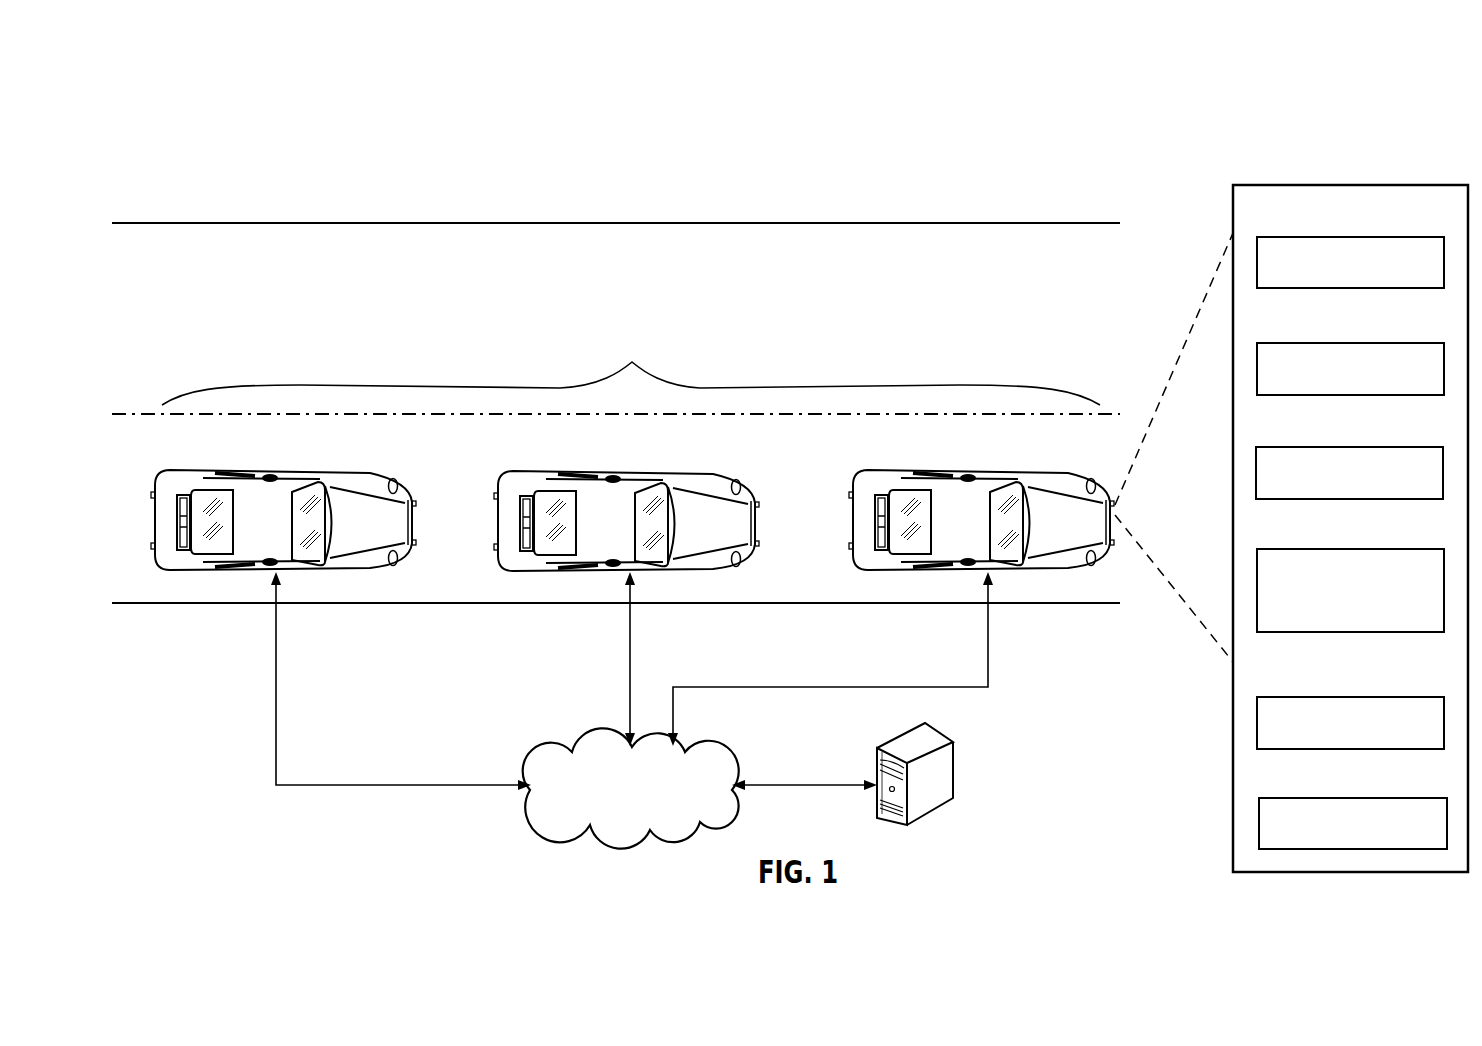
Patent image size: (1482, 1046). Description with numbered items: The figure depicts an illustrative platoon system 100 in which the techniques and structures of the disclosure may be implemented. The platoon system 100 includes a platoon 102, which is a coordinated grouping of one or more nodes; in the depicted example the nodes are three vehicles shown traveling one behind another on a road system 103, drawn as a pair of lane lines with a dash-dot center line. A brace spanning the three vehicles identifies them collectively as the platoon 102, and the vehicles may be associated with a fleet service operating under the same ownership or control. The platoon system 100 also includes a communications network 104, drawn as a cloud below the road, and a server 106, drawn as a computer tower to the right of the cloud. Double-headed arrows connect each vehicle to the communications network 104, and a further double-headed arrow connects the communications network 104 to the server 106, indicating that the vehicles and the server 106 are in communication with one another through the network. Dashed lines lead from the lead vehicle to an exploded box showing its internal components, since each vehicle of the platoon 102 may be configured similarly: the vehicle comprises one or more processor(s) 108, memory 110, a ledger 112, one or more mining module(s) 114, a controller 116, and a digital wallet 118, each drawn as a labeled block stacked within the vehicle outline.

The platoon system 100 is at (186, 143).
The platoon 102 is at (631, 366).
The road system 103 is at (307, 222).
The communications network 104 is at (582, 749).
The server 106 is at (903, 746).
The processor(s) 108 is at (1328, 236).
The memory 110 is at (1328, 342).
The ledger 112 is at (1328, 446).
The mining module(s) 114 is at (1328, 548).
The controller 116 is at (1328, 696).
The digital wallet 118 is at (1330, 797).